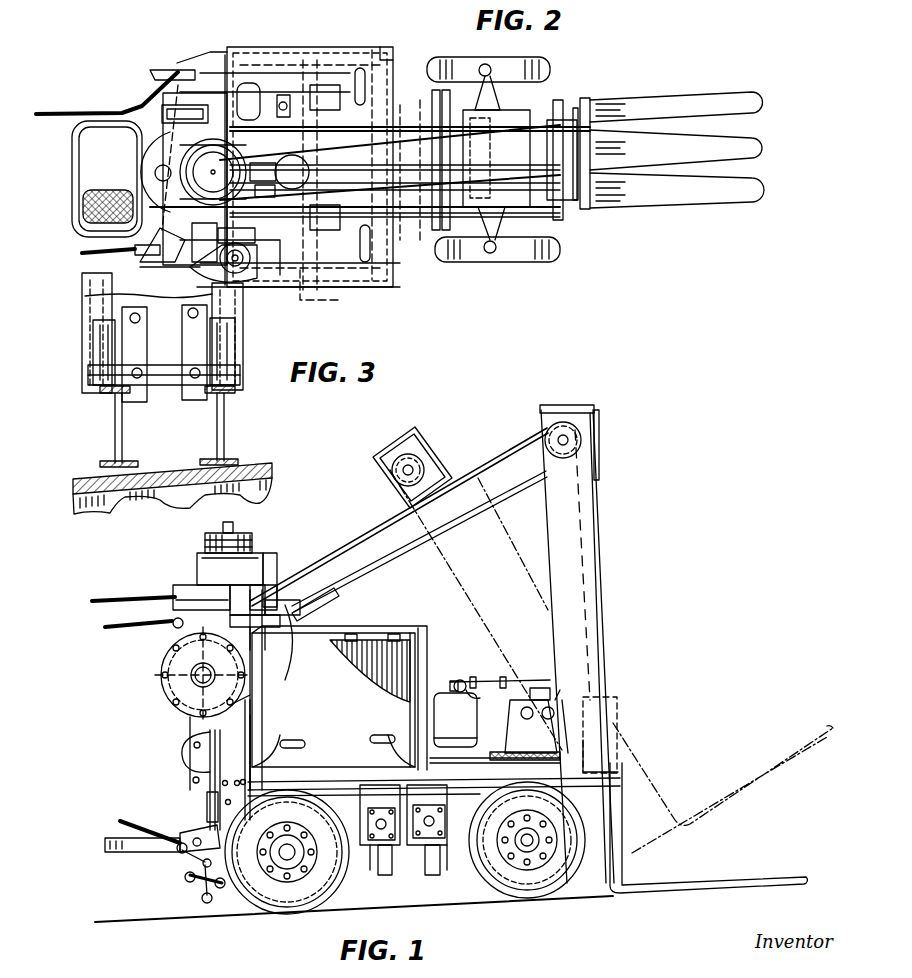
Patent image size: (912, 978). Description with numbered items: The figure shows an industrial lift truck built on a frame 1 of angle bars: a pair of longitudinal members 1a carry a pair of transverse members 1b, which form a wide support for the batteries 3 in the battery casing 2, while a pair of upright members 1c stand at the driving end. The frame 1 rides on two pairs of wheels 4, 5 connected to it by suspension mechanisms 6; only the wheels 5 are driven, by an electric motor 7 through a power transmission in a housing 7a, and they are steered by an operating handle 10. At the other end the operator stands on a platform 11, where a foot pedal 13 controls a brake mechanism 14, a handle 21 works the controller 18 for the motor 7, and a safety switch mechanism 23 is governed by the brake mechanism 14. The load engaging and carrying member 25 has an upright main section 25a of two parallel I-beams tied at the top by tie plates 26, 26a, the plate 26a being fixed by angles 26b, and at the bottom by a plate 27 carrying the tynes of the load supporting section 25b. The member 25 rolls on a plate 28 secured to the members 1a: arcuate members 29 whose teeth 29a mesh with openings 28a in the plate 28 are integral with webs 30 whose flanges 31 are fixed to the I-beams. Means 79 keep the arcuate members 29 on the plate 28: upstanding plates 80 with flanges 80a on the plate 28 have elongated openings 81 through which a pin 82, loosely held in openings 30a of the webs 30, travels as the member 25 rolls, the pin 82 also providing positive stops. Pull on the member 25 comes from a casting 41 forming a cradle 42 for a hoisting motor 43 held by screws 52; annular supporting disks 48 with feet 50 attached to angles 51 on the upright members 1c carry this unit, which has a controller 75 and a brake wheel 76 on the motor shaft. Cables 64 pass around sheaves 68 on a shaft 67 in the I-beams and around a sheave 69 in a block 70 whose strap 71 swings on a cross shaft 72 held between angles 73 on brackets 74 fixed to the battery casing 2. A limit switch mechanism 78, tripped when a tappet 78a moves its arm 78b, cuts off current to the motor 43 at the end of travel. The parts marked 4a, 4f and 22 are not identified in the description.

In FIG. 1, the frame 1 is at (432, 760).
In FIG. 2, the longitudinal members 1a is at (440, 232).
In FIG. 3, the longitudinal members 1a is at (82, 292).
In FIG. 1, the longitudinal members 1a is at (488, 790).
In FIG. 2, the transverse members 1b is at (228, 55).
In FIG. 1, the transverse members 1b is at (265, 760).
In FIG. 1, the upright members 1c is at (245, 740).
In FIG. 2, the battery casing 2 is at (353, 60).
In FIG. 1, the battery casing 2 is at (339, 698).
In FIG. 1, the batteries 3 is at (372, 672).
In FIG. 2, the wheels 4 is at (278, 80).
In FIG. 1, the wheels 4 is at (252, 925).
In FIG. 1, the motor housing 4a is at (160, 716).
In FIG. 1, the front wheel 4f is at (287, 852).
In FIG. 2, the wheels 5 is at (447, 63).
In FIG. 1, the wheels 5 is at (510, 895).
In FIG. 1, the suspension mechanisms 6 is at (420, 876).
In FIG. 1, the electric motor 7 is at (485, 755).
In FIG. 1, the housing 7a is at (560, 898).
In FIG. 2, the operating handle 10 is at (105, 113).
In FIG. 1, the operating handle 10 is at (118, 600).
In FIG. 2, the support (platform) 11 is at (107, 179).
In FIG. 1, the support (platform) 11 is at (135, 851).
In FIG. 2, the foot pedal 13 is at (100, 192).
In FIG. 1, the foot pedal 13 is at (124, 820).
In FIG. 1, the brake mechanism 14 is at (403, 815).
In FIG. 1, the controller 18 is at (183, 767).
In FIG. 2, the handle 21 is at (80, 251).
In FIG. 1, the handle 21 is at (112, 627).
In FIG. 1, the bolt 22 is at (228, 779).
In FIG. 1, the safety switch mechanism 23 is at (207, 804).
In FIG. 2, the load engaging and carrying member 25 is at (677, 158).
In FIG. 1, the load engaging and carrying member 25 is at (585, 644).
In FIG. 3, the main or upright section 25a is at (112, 440).
In FIG. 1, the main or upright section 25a is at (603, 570).
In FIG. 3, the load supporting section 25b is at (272, 490).
In FIG. 1, the load supporting section 25b is at (702, 880).
In FIG. 2, the tie plate 26 is at (585, 182).
In FIG. 1, the tie plate 26 is at (582, 438).
In FIG. 2, the tie plate 26a is at (580, 160).
In FIG. 1, the tie plate 26a is at (570, 410).
In FIG. 1, the angles 26b is at (600, 413).
In FIG. 2, the plate 27 is at (592, 104).
In FIG. 3, the plate 27 is at (258, 468).
In FIG. 1, the plate 27 is at (618, 832).
In FIG. 3, the plate 28 is at (150, 300).
In FIG. 1, the plate 28 is at (478, 722).
In FIG. 1, the openings 28a is at (513, 762).
In FIG. 3, the arcuate members 29 is at (235, 348).
In FIG. 1, the arcuate members 29 is at (531, 726).
In FIG. 1, the teeth 29a is at (515, 735).
In FIG. 3, the web 30 is at (107, 345).
In FIG. 1, the web 30 is at (562, 740).
In FIG. 3, the openings 30a is at (245, 368).
In FIG. 1, the openings 30a is at (558, 722).
In FIG. 3, the flange 31 is at (100, 393).
In FIG. 1, the flange 31 is at (572, 728).
In FIG. 1, the casting 41 is at (194, 588).
In FIG. 1, the cradle 42 is at (200, 566).
In FIG. 1, the motor 43 is at (272, 555).
In FIG. 2, the annular supporting disks 48 is at (158, 146).
In FIG. 1, the feet 50 is at (240, 706).
In FIG. 1, the angle 51 is at (245, 718).
In FIG. 1, the screws 52 is at (270, 565).
In FIG. 1, the cables 64 is at (497, 452).
In FIG. 1, the shaft 67 is at (568, 442).
In FIG. 2, the sheaves 68 is at (560, 122).
In FIG. 1, the sheaves 68 is at (548, 441).
In FIG. 1, the sheave 69 is at (340, 590).
In FIG. 1, the block 70 is at (325, 600).
In FIG. 2, the strap 71 is at (345, 205).
In FIG. 1, the strap 71 is at (290, 612).
In FIG. 2, the cross shaft or pin 72 is at (279, 157).
In FIG. 1, the cross shaft or pin 72 is at (298, 642).
In FIG. 2, the angles 73 is at (268, 193).
In FIG. 1, the angles 73 is at (270, 600).
In FIG. 1, the brackets 74 is at (260, 628).
In FIG. 1, the controller 75 is at (280, 580).
In FIG. 1, the wheel 76 is at (222, 528).
In FIG. 1, the limit switch mechanism 78 is at (452, 686).
In FIG. 1, the tappets 78a is at (462, 678).
In FIG. 1, the arm 78b is at (491, 693).
In FIG. 1, the means for maintaining rolling engagement 79 is at (554, 712).
In FIG. 3, the upstanding plates 80 is at (147, 337).
In FIG. 3, the flanges 80a is at (185, 346).
In FIG. 1, the elongated openings 81 is at (527, 681).
In FIG. 3, the pin or shaft 82 is at (165, 386).
In FIG. 1, the pin or shaft 82 is at (560, 698).